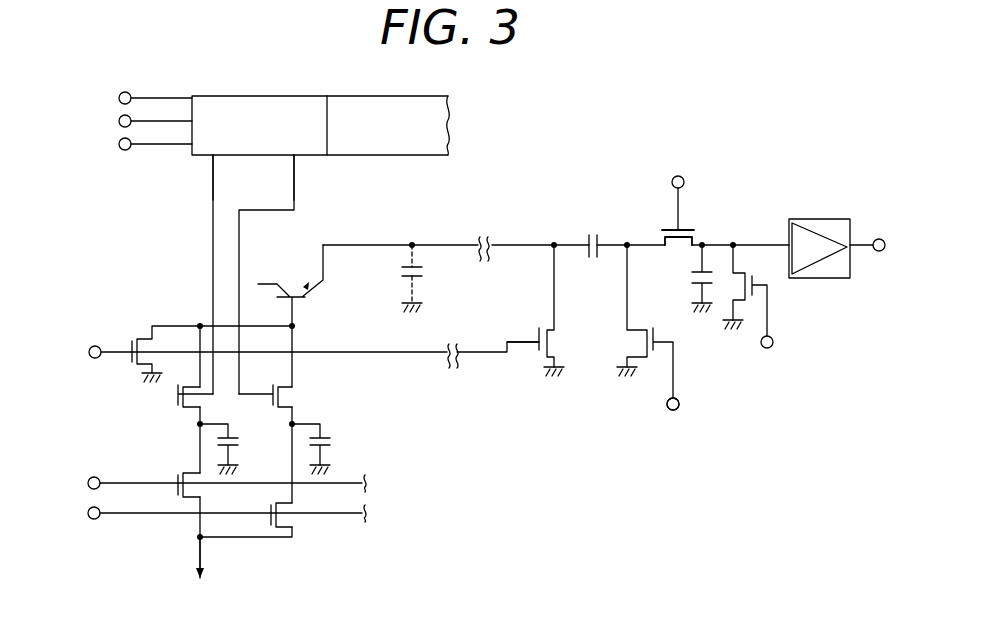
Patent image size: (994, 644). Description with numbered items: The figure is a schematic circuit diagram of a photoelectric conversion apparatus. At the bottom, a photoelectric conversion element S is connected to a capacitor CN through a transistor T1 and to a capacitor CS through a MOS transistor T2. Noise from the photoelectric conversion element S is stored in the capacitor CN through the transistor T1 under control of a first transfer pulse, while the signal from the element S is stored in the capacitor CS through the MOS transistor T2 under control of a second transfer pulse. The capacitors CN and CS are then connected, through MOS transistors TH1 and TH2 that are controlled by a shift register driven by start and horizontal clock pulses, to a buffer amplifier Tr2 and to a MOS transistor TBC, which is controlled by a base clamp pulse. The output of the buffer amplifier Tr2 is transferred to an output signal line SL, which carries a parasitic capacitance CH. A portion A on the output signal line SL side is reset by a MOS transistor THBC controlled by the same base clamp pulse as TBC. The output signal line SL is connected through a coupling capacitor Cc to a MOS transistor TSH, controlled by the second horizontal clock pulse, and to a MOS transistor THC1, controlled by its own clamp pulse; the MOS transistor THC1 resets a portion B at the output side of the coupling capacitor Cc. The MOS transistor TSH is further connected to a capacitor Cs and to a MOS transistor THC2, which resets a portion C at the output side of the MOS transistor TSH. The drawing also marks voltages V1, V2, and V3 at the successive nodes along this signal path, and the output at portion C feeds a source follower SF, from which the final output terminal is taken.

The MOS transistor TBC is at (201, 348).
The buffer amplifier Tr2 is at (300, 285).
The output signal line SL is at (372, 243).
The portion A is at (512, 240).
The voltage V1 is at (546, 233).
The coupling capacitor Cc is at (591, 230).
The voltage V2 is at (624, 233).
The portion B is at (648, 241).
The MOS transistor TSH is at (689, 225).
The voltage V3 is at (740, 233).
The portion C is at (773, 242).
The source follower SF is at (835, 217).
The parasitic capacitance CH is at (425, 278).
The MOS transistor THBC is at (535, 310).
The MOS transistor THC1 is at (655, 327).
The capacitor CS Cs is at (502, 359).
The MOS transistor THC2 is at (769, 290).
The MOS transistor TH1 is at (183, 410).
The MOS transistor TH2 is at (282, 397).
The capacitor CN is at (231, 444).
The transistor T1 is at (174, 474).
The MOS transistor T2 is at (296, 510).
The photoelectric conversion element S is at (198, 574).